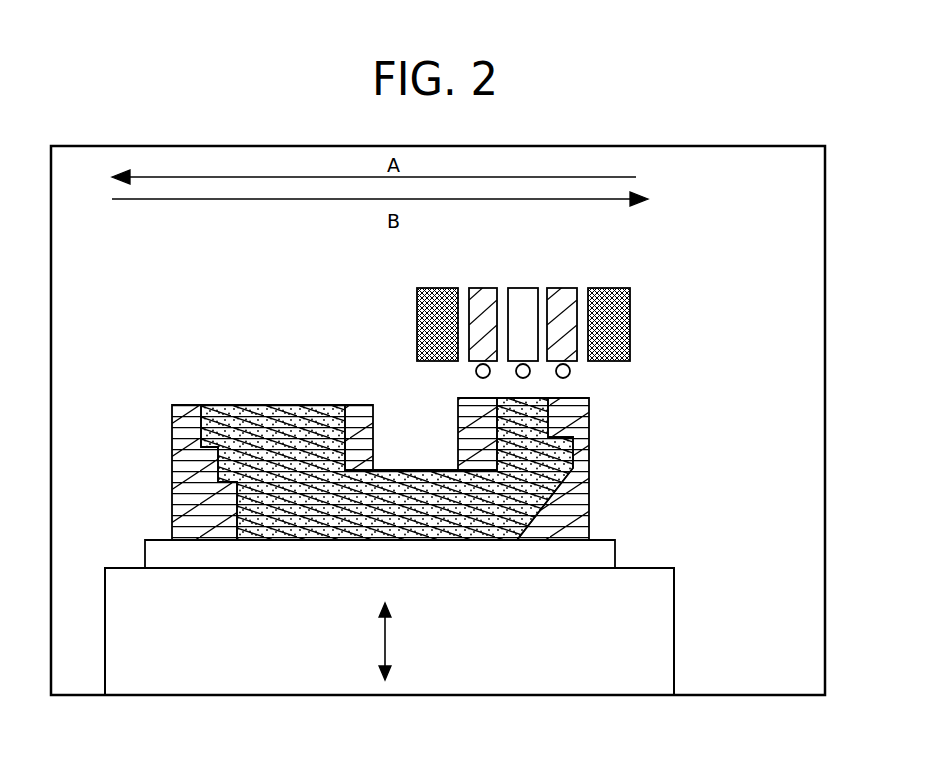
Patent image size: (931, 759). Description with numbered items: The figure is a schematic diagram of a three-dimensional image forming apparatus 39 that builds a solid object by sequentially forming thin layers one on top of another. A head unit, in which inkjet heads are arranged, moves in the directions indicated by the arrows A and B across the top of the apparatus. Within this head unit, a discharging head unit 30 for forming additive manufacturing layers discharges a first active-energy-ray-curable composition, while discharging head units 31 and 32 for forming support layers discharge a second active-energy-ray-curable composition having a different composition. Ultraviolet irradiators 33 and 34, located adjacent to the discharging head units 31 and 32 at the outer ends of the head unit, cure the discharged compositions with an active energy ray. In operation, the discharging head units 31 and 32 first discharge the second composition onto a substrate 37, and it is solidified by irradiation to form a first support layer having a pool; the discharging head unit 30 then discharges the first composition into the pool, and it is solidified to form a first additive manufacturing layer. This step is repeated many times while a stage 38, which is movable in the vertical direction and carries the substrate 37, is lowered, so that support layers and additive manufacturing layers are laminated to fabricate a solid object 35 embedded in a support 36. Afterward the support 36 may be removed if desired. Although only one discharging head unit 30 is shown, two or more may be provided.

The discharging head unit for forming additive manufacturing layers 30 is at (521, 287).
The discharging head unit for forming support layers 31 is at (483, 287).
The discharging head unit for forming support layers 32 is at (561, 287).
The ultraviolet irradiator 33 is at (413, 327).
The ultraviolet irradiator 34 is at (632, 327).
The solid object 35 is at (308, 396).
The support 36 is at (596, 426).
The substrate 37 is at (617, 558).
The stage 38 is at (676, 621).
The image forming apparatus 39 is at (827, 621).